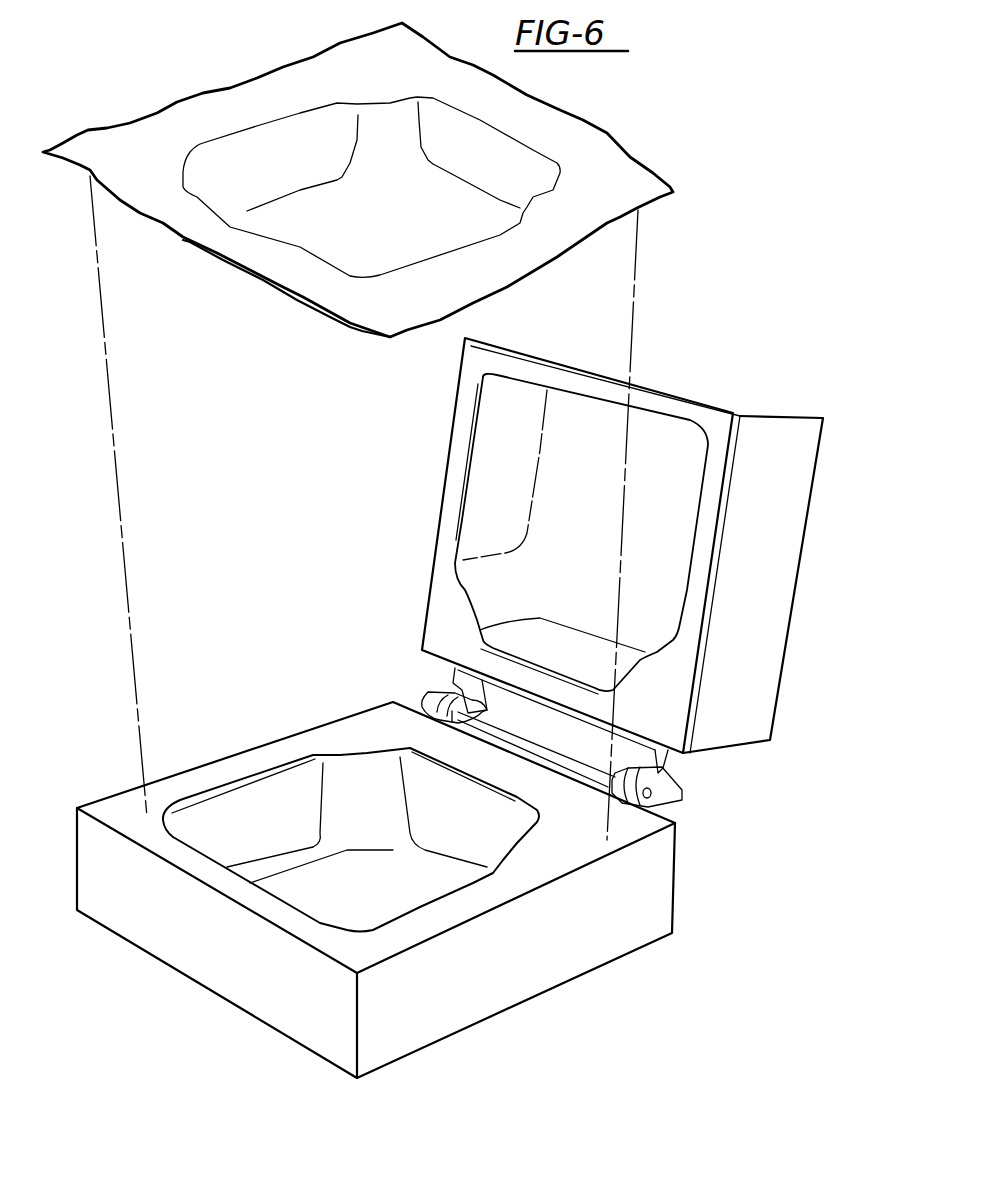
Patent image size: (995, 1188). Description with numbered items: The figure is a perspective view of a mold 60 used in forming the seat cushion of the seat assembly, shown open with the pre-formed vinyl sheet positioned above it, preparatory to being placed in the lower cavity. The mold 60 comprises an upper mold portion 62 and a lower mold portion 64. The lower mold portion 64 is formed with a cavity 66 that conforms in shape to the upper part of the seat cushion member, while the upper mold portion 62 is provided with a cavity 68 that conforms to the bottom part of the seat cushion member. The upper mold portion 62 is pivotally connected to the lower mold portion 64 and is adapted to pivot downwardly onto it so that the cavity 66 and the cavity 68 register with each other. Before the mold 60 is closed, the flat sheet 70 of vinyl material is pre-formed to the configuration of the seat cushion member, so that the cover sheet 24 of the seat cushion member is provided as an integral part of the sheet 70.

The mold 60 is at (212, 690).
The upper mold portion 62 is at (447, 458).
The lower mold portion 64 is at (113, 930).
The cavity 66 is at (311, 770).
The cavity 68 is at (657, 443).
The flat sheet 70 is at (181, 101).
The cover sheet 24 is at (253, 283).